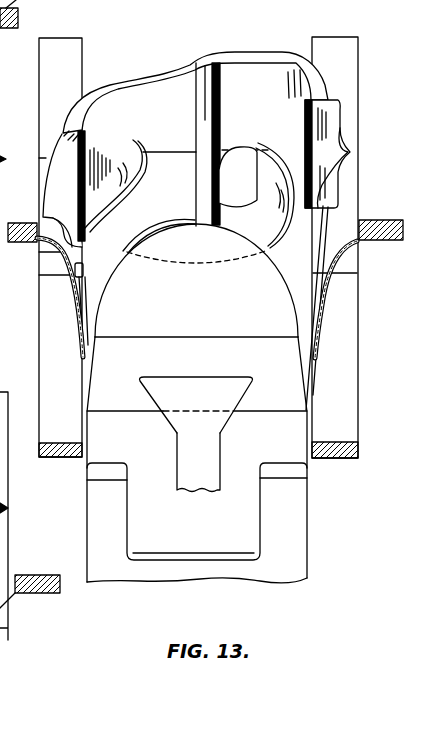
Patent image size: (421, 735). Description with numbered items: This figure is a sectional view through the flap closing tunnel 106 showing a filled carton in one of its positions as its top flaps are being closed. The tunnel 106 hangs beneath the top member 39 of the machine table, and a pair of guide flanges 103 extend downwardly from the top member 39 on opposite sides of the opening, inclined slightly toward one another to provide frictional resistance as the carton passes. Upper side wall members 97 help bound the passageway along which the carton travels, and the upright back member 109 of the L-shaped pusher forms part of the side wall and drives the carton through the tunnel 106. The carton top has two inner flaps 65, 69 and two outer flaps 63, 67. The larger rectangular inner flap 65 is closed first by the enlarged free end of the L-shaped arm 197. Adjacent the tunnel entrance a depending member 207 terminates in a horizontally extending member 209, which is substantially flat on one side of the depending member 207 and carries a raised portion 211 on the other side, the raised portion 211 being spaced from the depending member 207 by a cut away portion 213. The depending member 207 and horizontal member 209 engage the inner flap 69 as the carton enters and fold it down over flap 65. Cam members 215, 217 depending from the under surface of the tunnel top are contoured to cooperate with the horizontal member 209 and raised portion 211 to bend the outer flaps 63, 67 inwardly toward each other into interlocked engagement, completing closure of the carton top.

The top member 39 is at (24, 243).
The outer flap 63 is at (315, 287).
The inner flap 65 is at (275, 392).
The outer flap 67 is at (83, 295).
The inner flap 69 is at (272, 277).
The side wall members 97 is at (68, 62).
The guide flanges 103 is at (321, 333).
The tunnel member 106 is at (217, 55).
The back member 109 is at (153, 572).
The L-shaped arm 197 is at (205, 483).
The depending member 207 is at (226, 87).
The horizontally extending member 209 is at (176, 222).
The raised portion 211 is at (263, 168).
The cut away portion 213 is at (251, 200).
The cam member 215 is at (137, 152).
The cam member 217 is at (306, 106).